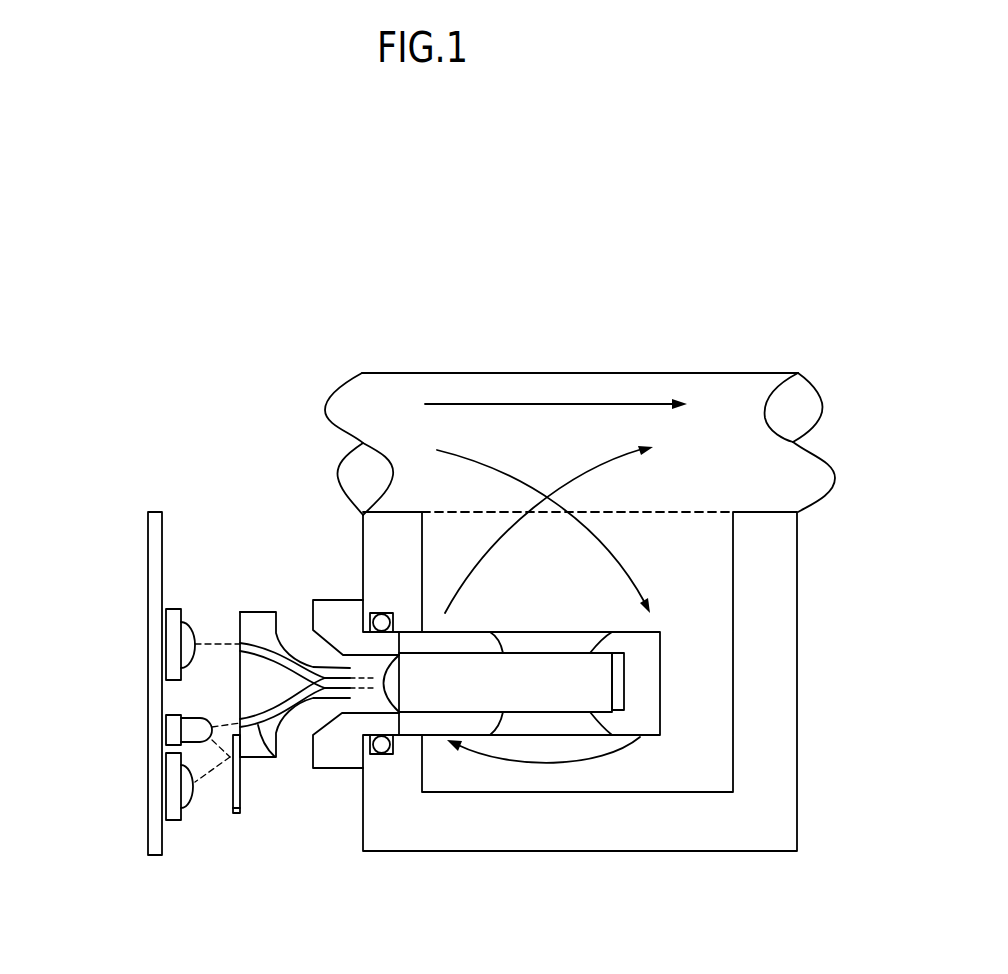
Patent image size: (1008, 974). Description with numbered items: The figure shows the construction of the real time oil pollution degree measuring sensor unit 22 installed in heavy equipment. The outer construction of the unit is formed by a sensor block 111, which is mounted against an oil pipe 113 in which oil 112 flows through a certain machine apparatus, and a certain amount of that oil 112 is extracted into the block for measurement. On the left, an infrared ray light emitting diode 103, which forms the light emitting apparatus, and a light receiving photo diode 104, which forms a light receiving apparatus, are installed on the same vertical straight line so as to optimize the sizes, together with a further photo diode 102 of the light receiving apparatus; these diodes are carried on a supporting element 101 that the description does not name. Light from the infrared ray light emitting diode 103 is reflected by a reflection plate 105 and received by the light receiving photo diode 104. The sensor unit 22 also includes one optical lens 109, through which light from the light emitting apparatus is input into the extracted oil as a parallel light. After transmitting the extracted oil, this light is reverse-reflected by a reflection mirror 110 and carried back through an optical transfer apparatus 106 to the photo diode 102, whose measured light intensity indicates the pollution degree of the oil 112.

The sensor unit 22 is at (273, 358).
The printed circuit board 101 is at (157, 522).
The photo diode 102 is at (168, 670).
The infrared ray light emitting diode 103 is at (168, 731).
The light receiving photo diode 104 is at (168, 790).
The reflection plate 105 is at (230, 797).
The optical transfer apparatus 106 is at (276, 760).
The optical lens 109 is at (382, 753).
The reflection mirror 110 is at (618, 683).
The sensor block 111 is at (550, 829).
The oil 112 is at (546, 390).
The oil pipe 113 is at (665, 373).